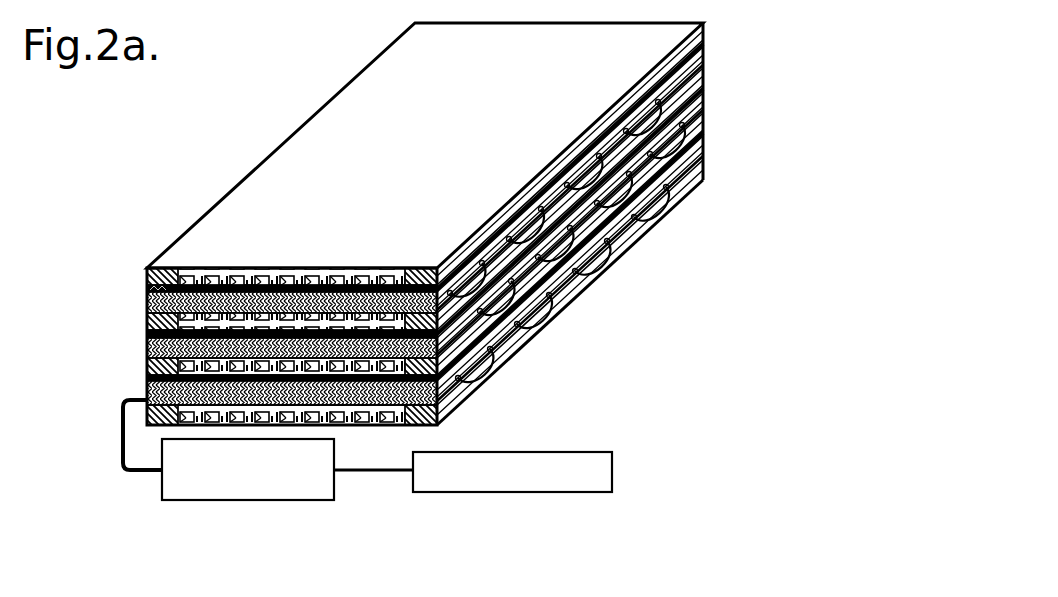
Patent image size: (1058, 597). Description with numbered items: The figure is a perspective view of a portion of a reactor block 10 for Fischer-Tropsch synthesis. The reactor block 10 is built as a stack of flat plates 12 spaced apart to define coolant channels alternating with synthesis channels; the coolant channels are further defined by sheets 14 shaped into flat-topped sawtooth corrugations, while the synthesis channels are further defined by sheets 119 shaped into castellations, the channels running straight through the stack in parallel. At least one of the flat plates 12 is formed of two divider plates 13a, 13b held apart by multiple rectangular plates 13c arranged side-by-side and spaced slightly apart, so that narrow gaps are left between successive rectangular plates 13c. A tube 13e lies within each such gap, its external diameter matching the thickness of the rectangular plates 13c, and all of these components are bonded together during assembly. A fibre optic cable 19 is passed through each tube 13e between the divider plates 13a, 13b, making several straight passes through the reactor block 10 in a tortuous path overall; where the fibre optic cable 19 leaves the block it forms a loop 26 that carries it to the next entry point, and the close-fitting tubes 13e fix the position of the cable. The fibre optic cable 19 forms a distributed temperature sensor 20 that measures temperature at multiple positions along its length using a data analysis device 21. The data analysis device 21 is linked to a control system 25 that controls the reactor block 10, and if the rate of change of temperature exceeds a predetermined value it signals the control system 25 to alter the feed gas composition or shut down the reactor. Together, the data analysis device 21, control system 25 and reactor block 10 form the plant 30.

The reactor block 10 is at (236, 128).
The flat plate 12 is at (147, 272).
The divider plate 13a is at (147, 289).
The divider plate 13b is at (147, 303).
The rectangular plate 13c is at (147, 347).
The tube 13e is at (465, 367).
The sheet 14 is at (392, 328).
The sheet 119 is at (333, 281).
The fibre optic cable 19 is at (540, 306).
The loop 26 is at (622, 215).
The distributed temperature sensor 20 is at (229, 489).
The data analysis device 21 is at (296, 495).
The control system 25 is at (480, 483).
The plant 30 is at (203, 523).